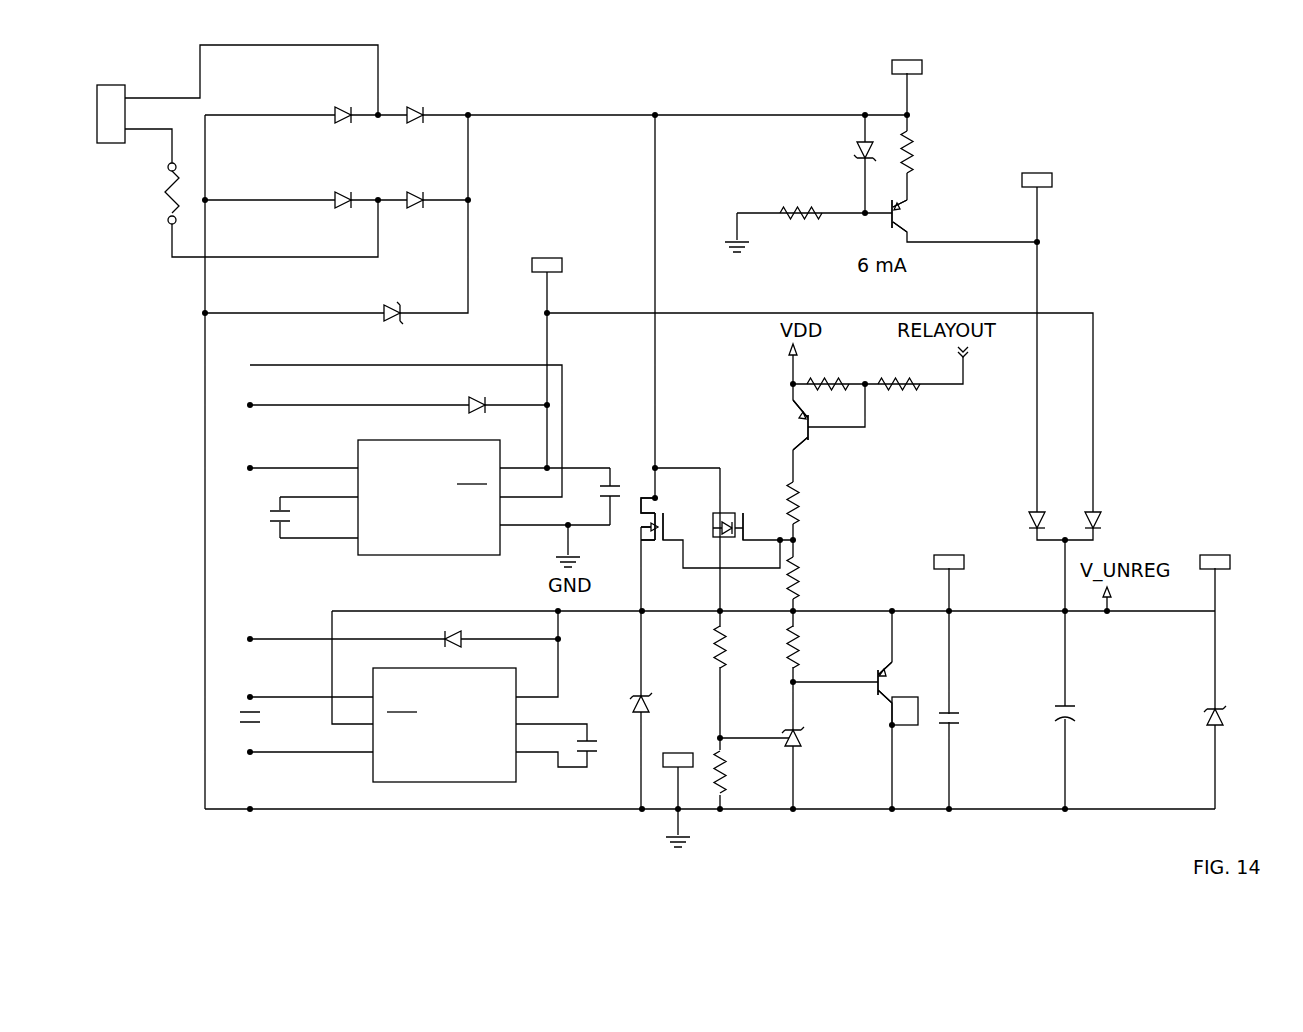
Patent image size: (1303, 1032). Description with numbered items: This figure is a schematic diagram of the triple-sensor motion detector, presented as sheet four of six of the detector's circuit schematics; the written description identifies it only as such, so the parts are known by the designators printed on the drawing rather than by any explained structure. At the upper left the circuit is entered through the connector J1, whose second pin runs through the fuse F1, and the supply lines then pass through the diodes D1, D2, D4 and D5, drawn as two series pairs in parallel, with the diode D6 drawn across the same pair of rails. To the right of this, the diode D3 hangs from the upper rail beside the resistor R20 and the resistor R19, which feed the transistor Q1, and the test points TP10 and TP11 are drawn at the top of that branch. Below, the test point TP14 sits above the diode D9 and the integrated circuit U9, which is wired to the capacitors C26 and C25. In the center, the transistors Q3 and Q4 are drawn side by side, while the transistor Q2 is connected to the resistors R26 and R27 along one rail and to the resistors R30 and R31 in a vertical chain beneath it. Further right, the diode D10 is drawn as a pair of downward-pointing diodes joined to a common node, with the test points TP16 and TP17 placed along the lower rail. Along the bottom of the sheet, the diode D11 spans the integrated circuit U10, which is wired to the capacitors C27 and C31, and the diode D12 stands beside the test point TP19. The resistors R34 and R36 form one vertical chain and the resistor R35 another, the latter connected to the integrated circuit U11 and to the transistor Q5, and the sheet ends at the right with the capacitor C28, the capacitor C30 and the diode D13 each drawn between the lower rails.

The power input connector J1 is at (120, 99).
The fuse F1 is at (139, 198).
The bridge rectifier diode D1 is at (341, 98).
The bridge rectifier diode D2 is at (413, 98).
The bridge rectifier diode D4 is at (341, 187).
The bridge rectifier diode D5 is at (413, 187).
The 43V transient suppressor zener diode D6 is at (388, 312).
The 3.0V zener diode D3 is at (849, 115).
The 95.3K resistor R20 is at (807, 214).
The test point TP10 is at (916, 51).
The 402 ohm resistor R19 is at (930, 154).
The PNP transistor current source Q1 is at (948, 209).
The test point TP11 is at (1046, 164).
The test point TP14 is at (543, 251).
The diode D9 is at (475, 393).
The LM2766 charge pump U9 is at (432, 500).
The 1.0uF capacitor C26 is at (293, 549).
The 1.0uF capacitor C25 is at (624, 460).
The MOSFET switch Q3 is at (681, 524).
The Si2308BDS MOSFET Q4 is at (750, 448).
The PNP transistor Q2 is at (848, 425).
The 21.0K resistor R26 is at (857, 371).
The 78.7K resistor R27 is at (932, 395).
The 21.0K resistor R30 is at (826, 506).
The 221K resistor R31 is at (823, 576).
The test point TP16 is at (950, 548).
The dual diode D10 is at (1063, 540).
The test point TP17 is at (1224, 550).
The diode D11 is at (433, 632).
The LM2766 charge pump U10 is at (448, 725).
The 1.0uF capacitor C27 is at (279, 726).
The 1.0uF capacitor C31 is at (599, 712).
The 3V zener diode D12 is at (658, 681).
The test point TP19 is at (676, 747).
The 5.62K resistor R34 is at (721, 652).
The 7.50K resistor R36 is at (721, 772).
The 1210 ohm resistor R35 is at (799, 650).
The TS3431 shunt regulator U11 is at (765, 713).
The PNP transistor Q5 is at (886, 716).
The 10uF/6.3V capacitor C28 is at (966, 725).
The 100uF/10V capacitor C30 is at (1104, 733).
The 8.7V zener diode D13 is at (1238, 693).